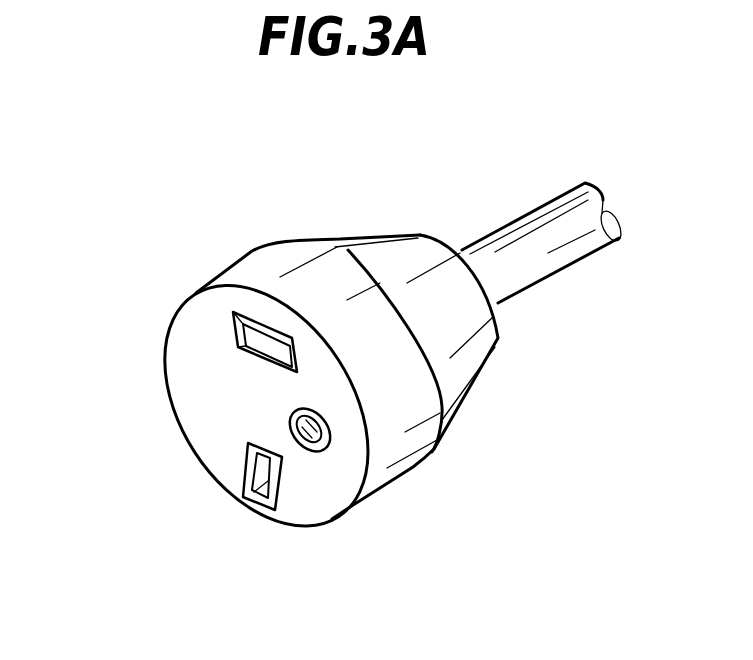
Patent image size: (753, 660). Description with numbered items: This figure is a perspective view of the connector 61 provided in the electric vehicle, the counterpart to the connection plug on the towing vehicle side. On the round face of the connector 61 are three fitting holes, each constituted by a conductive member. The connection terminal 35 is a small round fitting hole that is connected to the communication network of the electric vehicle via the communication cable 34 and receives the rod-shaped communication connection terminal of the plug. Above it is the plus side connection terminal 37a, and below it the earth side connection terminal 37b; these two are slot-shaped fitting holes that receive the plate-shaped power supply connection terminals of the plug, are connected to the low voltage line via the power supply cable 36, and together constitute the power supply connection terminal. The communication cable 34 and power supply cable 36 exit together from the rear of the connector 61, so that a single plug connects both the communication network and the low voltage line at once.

The connector 61 is at (283, 267).
The communication cable 34 is at (578, 275).
The power supply cable 36 is at (555, 258).
The plus side connection terminal 37a is at (233, 330).
The earth side connection terminal 37b is at (247, 480).
The connection terminal 35 is at (310, 449).